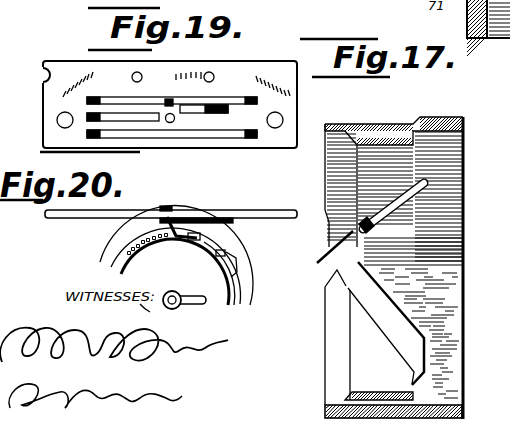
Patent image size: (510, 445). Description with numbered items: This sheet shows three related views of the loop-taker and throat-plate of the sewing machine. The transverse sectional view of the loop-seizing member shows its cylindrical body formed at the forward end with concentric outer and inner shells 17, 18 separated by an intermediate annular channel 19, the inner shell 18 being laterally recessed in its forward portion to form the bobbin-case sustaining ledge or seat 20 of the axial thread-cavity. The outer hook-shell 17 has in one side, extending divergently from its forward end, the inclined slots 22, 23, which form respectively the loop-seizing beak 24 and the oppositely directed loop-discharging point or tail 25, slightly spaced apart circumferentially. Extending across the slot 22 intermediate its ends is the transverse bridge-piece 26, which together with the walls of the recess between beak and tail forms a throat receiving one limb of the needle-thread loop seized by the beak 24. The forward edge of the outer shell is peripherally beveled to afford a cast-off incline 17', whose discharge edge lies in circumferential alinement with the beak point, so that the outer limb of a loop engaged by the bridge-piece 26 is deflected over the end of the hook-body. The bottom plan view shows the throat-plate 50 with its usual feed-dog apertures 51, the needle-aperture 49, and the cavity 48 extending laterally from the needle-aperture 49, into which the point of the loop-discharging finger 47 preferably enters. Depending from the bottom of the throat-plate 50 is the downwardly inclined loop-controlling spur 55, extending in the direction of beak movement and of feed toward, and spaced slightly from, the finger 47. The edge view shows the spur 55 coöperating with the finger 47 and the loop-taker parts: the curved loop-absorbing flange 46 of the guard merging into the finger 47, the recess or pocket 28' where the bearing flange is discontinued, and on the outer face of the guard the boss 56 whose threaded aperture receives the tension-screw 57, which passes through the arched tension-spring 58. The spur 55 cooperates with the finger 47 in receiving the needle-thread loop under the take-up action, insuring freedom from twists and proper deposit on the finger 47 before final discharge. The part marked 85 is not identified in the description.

In FIG. 19, the throat-plate 50 is at (61, 72).
In FIG. 20, the throat-plate 50 is at (56, 218).
In FIG. 19, the feed-dog apertures 51 is at (115, 117).
In FIG. 19, the cavity 48 is at (170, 103).
In FIG. 20, the cavity 48 is at (172, 208).
In FIG. 19, the loop-controlling spur 55 is at (195, 110).
In FIG. 20, the loop-controlling spur 55 is at (192, 222).
In FIG. 19, the needle-aperture 49 is at (175, 119).
In FIG. 20, the needle-aperture 49 is at (161, 209).
In FIG. 20, the loop-discharging finger 47 is at (120, 230).
In FIG. 20, the tension-spring 58 is at (213, 244).
In FIG. 20, the recess or pocket 28' is at (175, 270).
In FIG. 20, the loop-absorbing flange 46 is at (251, 268).
In FIG. 20, the tension-screw 57 is at (238, 256).
In FIG. 20, the boss 56 is at (223, 260).
In FIG. 20, the lever 85 is at (174, 309).
In FIG. 17, the outer shell 17 is at (394, 263).
In FIG. 17, the cast-off incline 17' is at (315, 113).
In FIG. 17, the inner shell 18 is at (374, 126).
In FIG. 17, the annular channel 19 is at (398, 126).
In FIG. 17, the inclined slot 22 is at (427, 188).
In FIG. 17, the bridge-piece 26 is at (363, 232).
In FIG. 17, the loop-seizing beak 24 is at (325, 242).
In FIG. 17, the loop-discharging point or tail 25 is at (342, 282).
In FIG. 17, the bobbin-case sustaining ledge or seat 20 is at (350, 324).
In FIG. 17, the inclined slot 23 is at (386, 323).